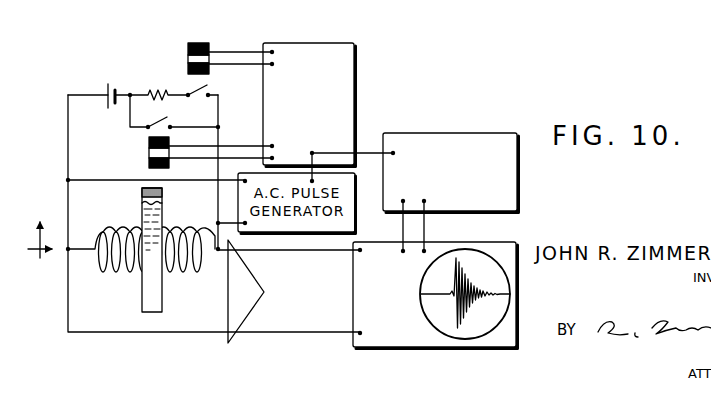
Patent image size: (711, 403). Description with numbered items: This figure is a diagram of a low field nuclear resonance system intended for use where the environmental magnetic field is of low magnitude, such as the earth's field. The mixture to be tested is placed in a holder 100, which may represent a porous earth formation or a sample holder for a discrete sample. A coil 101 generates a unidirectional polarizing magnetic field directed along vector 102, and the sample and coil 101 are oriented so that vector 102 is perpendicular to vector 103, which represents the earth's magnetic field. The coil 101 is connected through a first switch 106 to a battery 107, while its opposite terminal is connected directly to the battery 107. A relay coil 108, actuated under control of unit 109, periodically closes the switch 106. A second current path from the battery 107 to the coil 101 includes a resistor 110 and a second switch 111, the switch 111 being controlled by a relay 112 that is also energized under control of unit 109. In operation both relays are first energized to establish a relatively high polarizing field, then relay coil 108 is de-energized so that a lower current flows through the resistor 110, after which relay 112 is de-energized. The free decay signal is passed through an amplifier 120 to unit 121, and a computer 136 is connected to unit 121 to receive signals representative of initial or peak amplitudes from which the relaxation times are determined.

The holder 100 is at (162, 305).
The coil 101 is at (105, 268).
The vector 102 is at (41, 261).
The vector 103 is at (44, 233).
The first switch 106 is at (158, 130).
The battery 107 is at (105, 85).
The relay coil 108 is at (148, 161).
The unit 109 is at (341, 43).
The resistor 110 is at (151, 89).
The second switch 111 is at (199, 101).
The relay 112 is at (212, 46).
The amplifier 120 is at (250, 303).
The unit 121 is at (410, 348).
The computer 136 is at (480, 133).